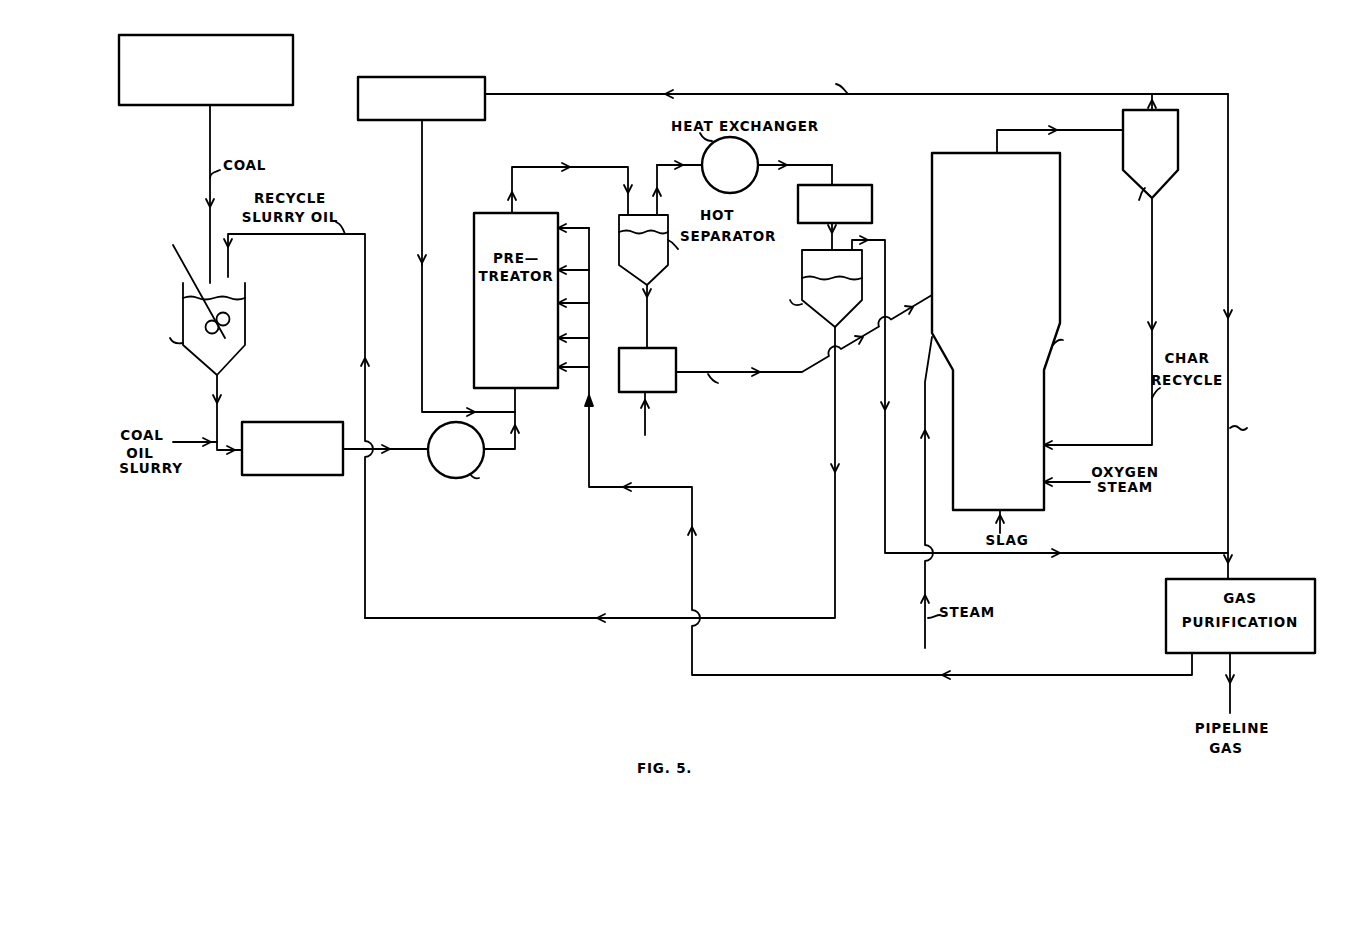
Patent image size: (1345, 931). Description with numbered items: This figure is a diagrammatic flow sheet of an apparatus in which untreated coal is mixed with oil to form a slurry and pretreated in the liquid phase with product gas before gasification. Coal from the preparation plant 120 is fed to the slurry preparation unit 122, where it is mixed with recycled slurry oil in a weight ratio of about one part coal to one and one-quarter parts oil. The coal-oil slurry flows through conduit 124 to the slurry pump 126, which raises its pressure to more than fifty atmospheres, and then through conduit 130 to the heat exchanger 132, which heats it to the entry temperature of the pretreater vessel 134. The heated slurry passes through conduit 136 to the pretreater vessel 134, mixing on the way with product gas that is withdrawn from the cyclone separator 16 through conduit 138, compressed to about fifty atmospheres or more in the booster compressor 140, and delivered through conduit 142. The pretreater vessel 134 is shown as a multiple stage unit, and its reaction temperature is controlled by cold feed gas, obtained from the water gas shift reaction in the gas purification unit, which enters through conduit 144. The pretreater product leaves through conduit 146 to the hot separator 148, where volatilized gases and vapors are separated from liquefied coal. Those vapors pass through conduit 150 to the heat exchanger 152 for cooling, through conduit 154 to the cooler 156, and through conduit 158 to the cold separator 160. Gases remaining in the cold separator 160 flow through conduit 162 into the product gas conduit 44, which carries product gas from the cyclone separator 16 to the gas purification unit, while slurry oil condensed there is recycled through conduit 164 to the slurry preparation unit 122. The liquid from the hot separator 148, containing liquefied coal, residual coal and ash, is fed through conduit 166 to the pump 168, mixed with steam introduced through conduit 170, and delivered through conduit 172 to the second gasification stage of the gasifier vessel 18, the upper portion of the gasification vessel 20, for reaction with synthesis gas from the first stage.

The preparation plant 120 is at (292, 48).
The slurry preparation unit 122 is at (245, 306).
The conduit 124 is at (217, 390).
The slurry pump 126 is at (295, 422).
The conduit 130 is at (409, 446).
The heat exchanger 132 is at (443, 456).
The pretreater vessel 134 is at (422, 330).
The conduit 136 is at (515, 446).
The conduit 138 is at (610, 95).
The booster compressor 140 is at (415, 77).
The conduit 142 is at (422, 168).
The conduit 144 is at (670, 487).
The conduit 146 is at (561, 167).
The hot separator 148 is at (657, 212).
The conduit 150 is at (657, 165).
The heat exchanger 152 is at (756, 150).
The conduit 154 is at (832, 180).
The cooler 156 is at (872, 198).
The conduit 158 is at (832, 241).
The cold separator 160 is at (802, 266).
The conduit 162 is at (885, 450).
The conduit 164 is at (835, 512).
The conduit 166 is at (647, 330).
The pump 168 is at (660, 348).
The conduit 170 is at (645, 418).
The conduit 172 is at (801, 370).
The cyclone separator 16 is at (1143, 150).
The gasifier vessel 18 is at (1037, 331).
The gasification vessel 20 is at (984, 261).
The product gas conduit 44 is at (1228, 476).